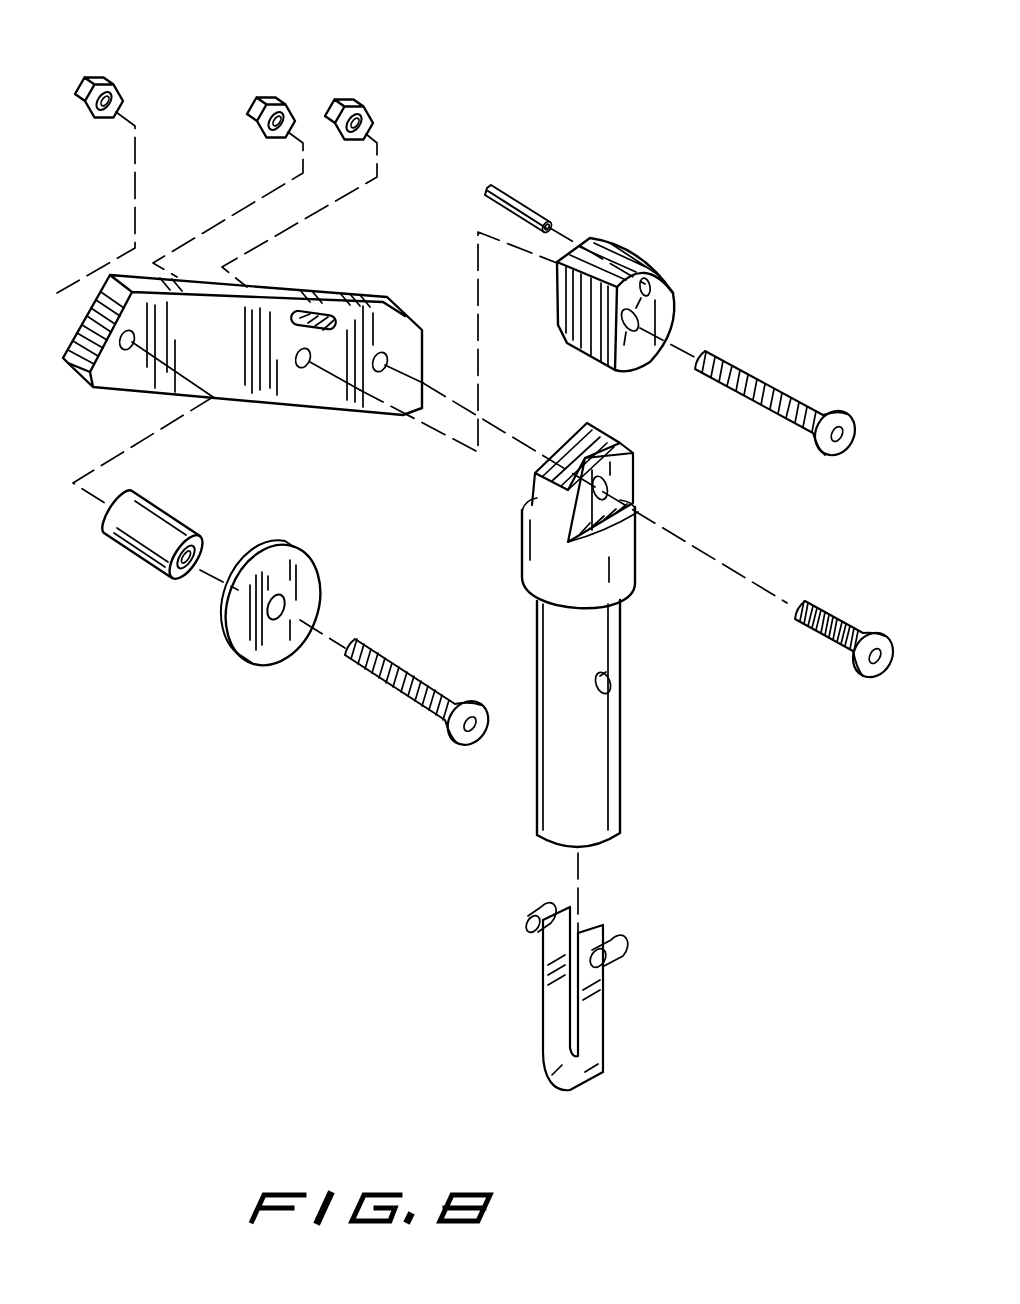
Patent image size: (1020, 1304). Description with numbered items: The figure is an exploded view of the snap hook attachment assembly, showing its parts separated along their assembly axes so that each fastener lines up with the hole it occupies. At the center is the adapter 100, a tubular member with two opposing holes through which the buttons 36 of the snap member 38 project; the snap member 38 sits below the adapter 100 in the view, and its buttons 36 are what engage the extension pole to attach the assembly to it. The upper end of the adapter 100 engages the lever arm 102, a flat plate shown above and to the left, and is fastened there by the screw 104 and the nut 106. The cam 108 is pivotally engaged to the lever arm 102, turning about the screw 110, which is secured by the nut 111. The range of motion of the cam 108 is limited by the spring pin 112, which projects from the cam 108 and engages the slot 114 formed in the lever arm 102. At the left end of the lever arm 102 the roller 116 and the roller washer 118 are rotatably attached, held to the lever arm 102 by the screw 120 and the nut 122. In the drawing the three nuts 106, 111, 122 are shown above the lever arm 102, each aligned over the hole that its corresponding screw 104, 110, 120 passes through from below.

The buttons 36 is at (528, 913).
The snap member 38 is at (597, 1043).
The adapter 100 is at (622, 807).
The lever arm 102 is at (386, 296).
The screw 104 is at (855, 680).
The nut 106 is at (349, 100).
The cam 108 is at (638, 258).
The screw 110 is at (834, 409).
The nut 111 is at (270, 98).
The spring pin 112 is at (525, 200).
The slot 114 is at (316, 312).
The roller 116 is at (133, 560).
The roller washer 118 is at (242, 657).
The screw 120 is at (420, 703).
The nut 122 is at (100, 78).